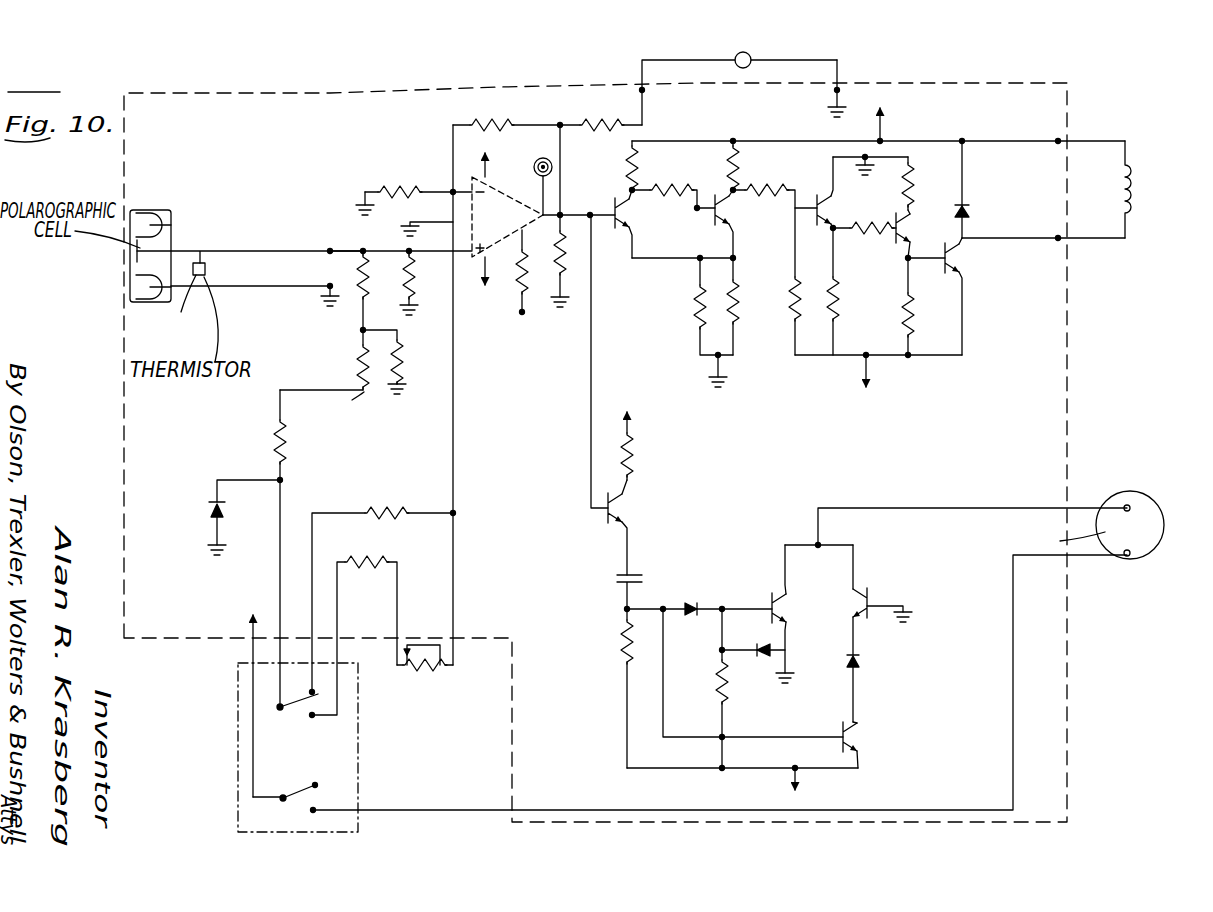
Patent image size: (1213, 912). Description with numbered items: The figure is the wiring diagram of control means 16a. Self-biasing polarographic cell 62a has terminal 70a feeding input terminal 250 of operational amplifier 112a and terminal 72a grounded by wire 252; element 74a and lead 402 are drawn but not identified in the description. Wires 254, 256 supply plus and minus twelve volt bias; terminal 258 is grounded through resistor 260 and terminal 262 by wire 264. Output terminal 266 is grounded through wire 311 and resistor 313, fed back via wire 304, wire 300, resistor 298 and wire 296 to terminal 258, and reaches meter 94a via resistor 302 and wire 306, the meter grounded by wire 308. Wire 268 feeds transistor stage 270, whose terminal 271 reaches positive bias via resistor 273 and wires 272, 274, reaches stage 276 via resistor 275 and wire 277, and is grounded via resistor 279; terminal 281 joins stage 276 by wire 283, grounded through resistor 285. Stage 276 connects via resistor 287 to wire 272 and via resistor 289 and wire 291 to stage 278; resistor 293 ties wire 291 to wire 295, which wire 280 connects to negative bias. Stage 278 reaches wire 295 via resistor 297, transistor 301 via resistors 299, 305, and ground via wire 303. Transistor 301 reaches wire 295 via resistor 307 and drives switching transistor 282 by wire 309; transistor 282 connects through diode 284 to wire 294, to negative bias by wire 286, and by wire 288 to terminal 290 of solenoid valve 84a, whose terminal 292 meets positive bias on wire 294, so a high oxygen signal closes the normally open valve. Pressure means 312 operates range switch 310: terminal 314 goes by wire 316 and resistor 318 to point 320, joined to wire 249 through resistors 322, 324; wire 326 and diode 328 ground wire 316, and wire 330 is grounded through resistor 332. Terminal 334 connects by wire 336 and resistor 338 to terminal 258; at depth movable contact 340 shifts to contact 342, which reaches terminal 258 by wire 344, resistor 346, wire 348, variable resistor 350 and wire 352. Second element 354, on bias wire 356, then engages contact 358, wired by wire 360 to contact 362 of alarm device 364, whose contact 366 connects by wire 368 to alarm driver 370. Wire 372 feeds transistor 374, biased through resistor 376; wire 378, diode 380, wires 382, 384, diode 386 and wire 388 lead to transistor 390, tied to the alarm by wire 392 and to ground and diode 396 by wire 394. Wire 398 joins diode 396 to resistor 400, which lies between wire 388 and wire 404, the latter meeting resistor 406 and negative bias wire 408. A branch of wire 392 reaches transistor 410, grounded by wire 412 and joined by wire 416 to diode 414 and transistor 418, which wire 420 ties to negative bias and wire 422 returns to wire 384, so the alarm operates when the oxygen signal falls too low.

The control means 16a is at (427, 140).
The electrochemical cell 62a is at (186, 210).
The terminal of sensing device 70a is at (254, 246).
The sensing device terminal 72a is at (241, 291).
The thermistor 74a is at (195, 280).
The solenoid valve 84a is at (1133, 196).
The meter 94a is at (752, 63).
The operational amplifier 112a is at (503, 305).
The wire 249 is at (336, 249).
The input terminal 250 is at (447, 258).
The wire 252 is at (307, 293).
The wire 254 is at (467, 184).
The wire 256 is at (490, 268).
The amplifier terminal 258 is at (467, 190).
The resistor 260 is at (385, 190).
The amplifier terminal 262 is at (502, 220).
The wire 264 is at (432, 218).
The output terminal 266 is at (565, 212).
The wire 268 is at (604, 222).
The transistor amplifier stage 270 is at (612, 228).
The terminal 271 is at (668, 191).
The wire 272 is at (743, 140).
The resistor 273 is at (640, 166).
The wire 274 is at (885, 126).
The resistor 275 is at (643, 224).
The transistor amplifier stage 276 is at (794, 252).
The wire 277 is at (642, 233).
The transistor amplifier stage 278 is at (832, 213).
The resistor 279 is at (697, 320).
The wire 280 is at (850, 374).
The terminal 281 is at (640, 258).
The switching transistor 282 is at (970, 262).
The wire 283 is at (735, 262).
The diode 284 is at (965, 208).
The resistor 285 is at (738, 320).
The wire 286 is at (963, 329).
The resistor 287 is at (744, 167).
The wire 288 is at (1016, 237).
The resistor 289 is at (737, 200).
The terminal of solenoid valve 290 is at (1126, 241).
The wire 291 is at (774, 196).
The terminal of solenoid valve 292 is at (1125, 140).
The resistor 293 is at (760, 307).
The wire 294 is at (1012, 140).
The wire 295 is at (900, 357).
The wire 296 is at (450, 125).
The resistor 297 is at (857, 291).
The resistor 298 is at (500, 118).
The resistor 299 is at (864, 251).
The wire 300 is at (545, 122).
The amplifier transistor 301 is at (905, 222).
The resistor 302 is at (615, 118).
The wire 303 is at (832, 143).
The wire 304 is at (565, 155).
The resistor 305 is at (912, 175).
The wire 306 is at (683, 70).
The resistor 307 is at (912, 320).
The wire 308 is at (845, 72).
The wire 309 is at (926, 258).
The range switch 310 is at (270, 734).
The wire 311 is at (592, 305).
The pressure operated means 312 is at (292, 677).
The resistor 313 is at (556, 250).
The switch terminal 314 is at (280, 700).
The wire 316 is at (280, 572).
The resistor 318 is at (278, 418).
The point 320 is at (302, 435).
The resistor 322 is at (358, 360).
The resistor 324 is at (360, 268).
The wire 326 is at (237, 480).
The diode 328 is at (210, 508).
The wire 330 is at (405, 362).
The resistor 332 is at (400, 397).
The switch terminal 334 is at (320, 692).
The wire 336 is at (312, 522).
The resistor 338 is at (393, 508).
The movable contact 340 is at (282, 694).
The contact 342 is at (318, 718).
The wire 344 is at (338, 572).
The resistor 346 is at (370, 562).
The wire 348 is at (405, 660).
The variable resistor 350 is at (435, 672).
The wire 352 is at (453, 585).
The second movable contact element 354 is at (283, 800).
The bias wire 356 is at (253, 761).
The contact 358 is at (316, 806).
The wire 360 is at (469, 808).
The alarm contact 362 is at (1128, 557).
The alarm device 364 is at (1163, 550).
The alarm contact 366 is at (1128, 504).
The wire 368 is at (994, 506).
The alarm driver portion 370 is at (751, 544).
The wire 372 is at (590, 390).
The amplifying transistor 374 is at (604, 510).
The resistor 376 is at (636, 452).
The wire 378 is at (631, 548).
The diode 380 is at (615, 586).
The wire 382 is at (620, 612).
The wire 384 is at (663, 616).
The diode 386 is at (690, 601).
The wire 388 is at (755, 593).
The transistor 390 is at (784, 611).
The wire 392 is at (818, 540).
The wire 394 is at (788, 656).
The diode 396 is at (762, 662).
The wire 398 is at (735, 652).
The resistor 400 is at (720, 679).
The conductor 402 is at (720, 716).
The wire 404 is at (662, 771).
The resistor 406 is at (620, 659).
The wire 408 is at (800, 772).
The transistor 410 is at (860, 588).
The wire 412 is at (888, 604).
The diode 414 is at (862, 668).
The wire 416 is at (860, 645).
The transistor 418 is at (860, 741).
The wire 420 is at (858, 701).
The wire 422 is at (662, 740).